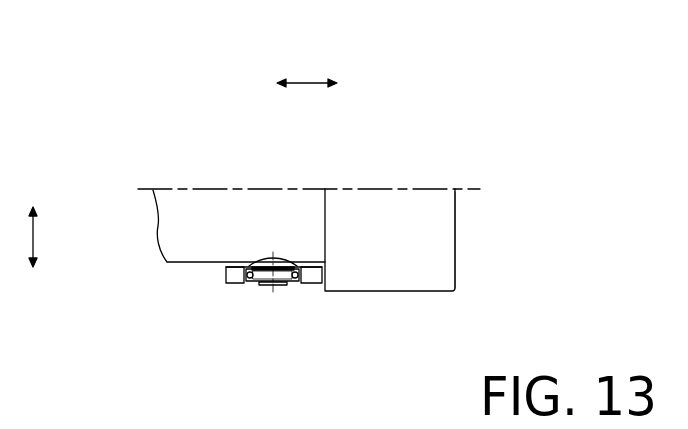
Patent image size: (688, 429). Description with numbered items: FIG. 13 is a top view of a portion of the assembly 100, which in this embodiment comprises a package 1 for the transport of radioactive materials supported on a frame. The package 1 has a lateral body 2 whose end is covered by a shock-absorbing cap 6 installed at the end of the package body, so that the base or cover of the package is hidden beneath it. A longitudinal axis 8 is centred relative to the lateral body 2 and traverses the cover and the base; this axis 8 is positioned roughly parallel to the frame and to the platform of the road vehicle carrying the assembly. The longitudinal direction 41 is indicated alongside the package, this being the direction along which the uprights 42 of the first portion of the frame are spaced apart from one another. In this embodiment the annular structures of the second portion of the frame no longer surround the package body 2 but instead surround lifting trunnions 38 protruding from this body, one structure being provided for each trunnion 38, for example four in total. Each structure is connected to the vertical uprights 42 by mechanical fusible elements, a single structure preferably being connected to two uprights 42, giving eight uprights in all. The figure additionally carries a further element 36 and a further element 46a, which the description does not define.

The assembly 100 is at (255, 112).
The package 1 is at (210, 187).
The lateral body 2 is at (257, 202).
The shock-absorbing cap 6 is at (408, 273).
The longitudinal axis 8 is at (468, 187).
The vertical direction 36 is at (35, 235).
The longitudinal direction 41 is at (303, 85).
The upright 42 is at (229, 276).
The spring element 46a is at (262, 285).
The lifting trunnion 38 is at (280, 287).